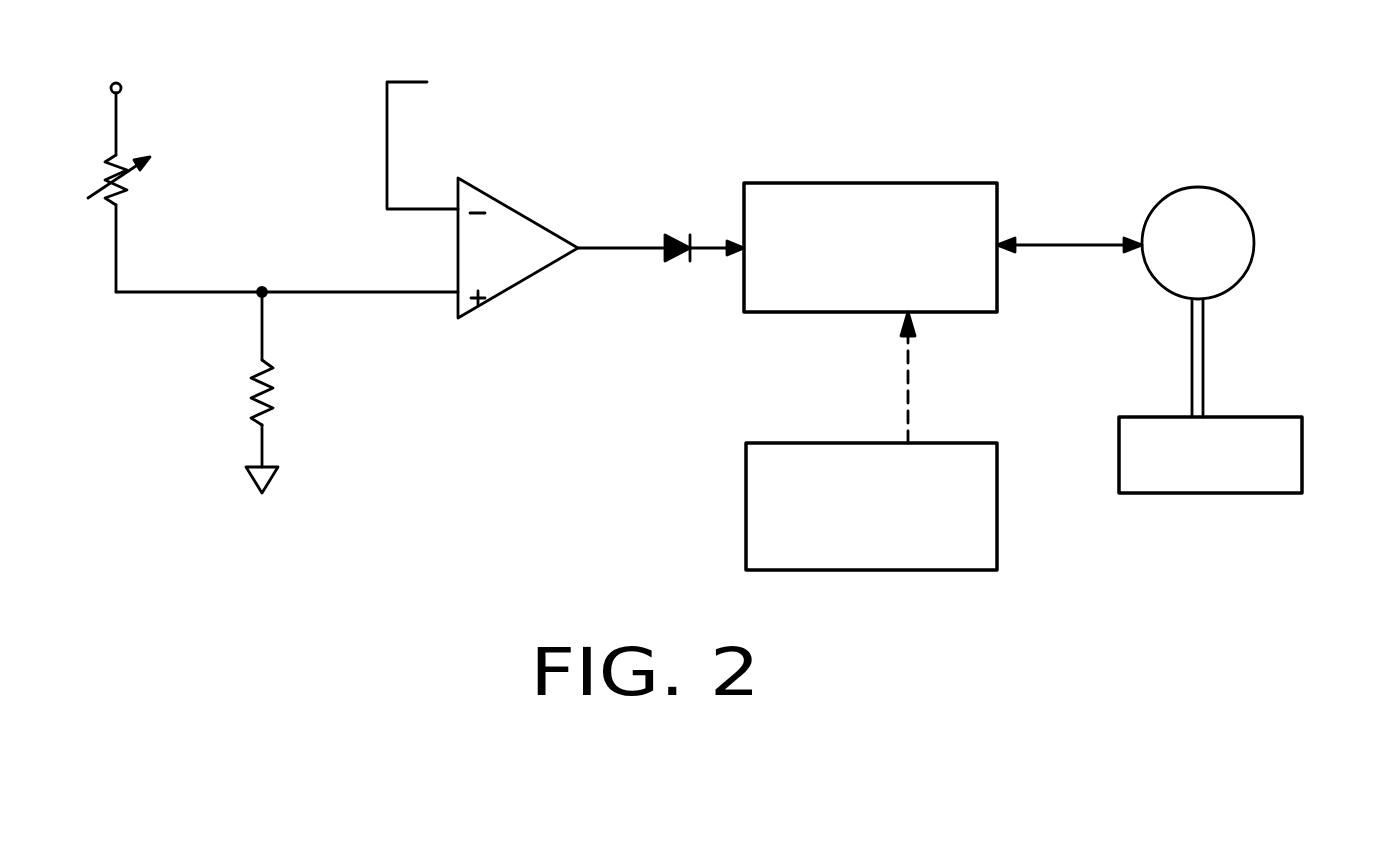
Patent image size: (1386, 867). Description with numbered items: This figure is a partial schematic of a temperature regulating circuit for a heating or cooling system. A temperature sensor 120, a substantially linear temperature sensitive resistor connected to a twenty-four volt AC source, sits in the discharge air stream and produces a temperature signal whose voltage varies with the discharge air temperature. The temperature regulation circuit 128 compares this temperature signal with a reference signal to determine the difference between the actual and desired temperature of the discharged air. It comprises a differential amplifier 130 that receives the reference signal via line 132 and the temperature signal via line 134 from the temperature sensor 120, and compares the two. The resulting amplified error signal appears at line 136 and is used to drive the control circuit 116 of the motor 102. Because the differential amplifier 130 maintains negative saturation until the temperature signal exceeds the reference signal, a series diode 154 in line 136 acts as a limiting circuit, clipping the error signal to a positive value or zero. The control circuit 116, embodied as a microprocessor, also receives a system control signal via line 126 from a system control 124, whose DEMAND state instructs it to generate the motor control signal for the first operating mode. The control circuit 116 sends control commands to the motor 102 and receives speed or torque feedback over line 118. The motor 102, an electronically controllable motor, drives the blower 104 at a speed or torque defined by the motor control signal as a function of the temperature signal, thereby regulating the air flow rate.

The motor 102 is at (1257, 236).
The blower 104 is at (1305, 452).
The control circuit 116 is at (812, 313).
The line 118 is at (1038, 245).
The temperature sensor 120 is at (110, 207).
The system control 124 is at (880, 573).
The line 126 is at (912, 388).
The temperature regulation circuit 128 is at (606, 90).
The differential amplifier 130 is at (520, 213).
The line 132 is at (387, 130).
The line 134 is at (307, 291).
The line 136 is at (610, 257).
The series diode 154 is at (680, 262).